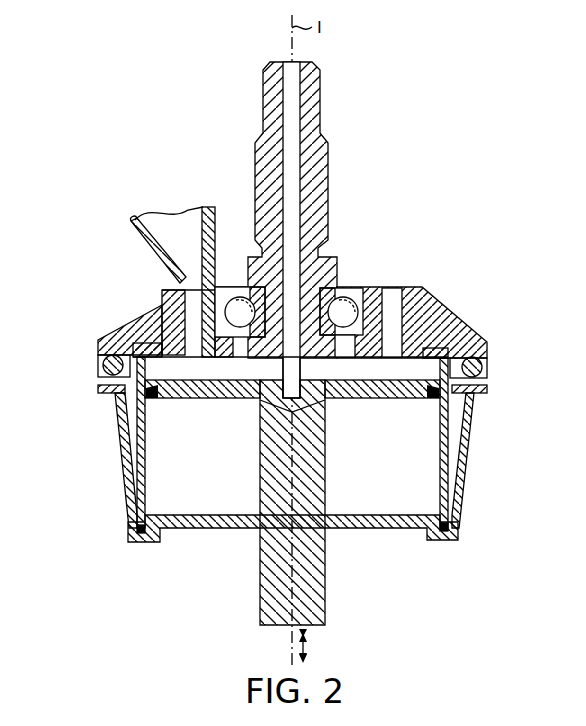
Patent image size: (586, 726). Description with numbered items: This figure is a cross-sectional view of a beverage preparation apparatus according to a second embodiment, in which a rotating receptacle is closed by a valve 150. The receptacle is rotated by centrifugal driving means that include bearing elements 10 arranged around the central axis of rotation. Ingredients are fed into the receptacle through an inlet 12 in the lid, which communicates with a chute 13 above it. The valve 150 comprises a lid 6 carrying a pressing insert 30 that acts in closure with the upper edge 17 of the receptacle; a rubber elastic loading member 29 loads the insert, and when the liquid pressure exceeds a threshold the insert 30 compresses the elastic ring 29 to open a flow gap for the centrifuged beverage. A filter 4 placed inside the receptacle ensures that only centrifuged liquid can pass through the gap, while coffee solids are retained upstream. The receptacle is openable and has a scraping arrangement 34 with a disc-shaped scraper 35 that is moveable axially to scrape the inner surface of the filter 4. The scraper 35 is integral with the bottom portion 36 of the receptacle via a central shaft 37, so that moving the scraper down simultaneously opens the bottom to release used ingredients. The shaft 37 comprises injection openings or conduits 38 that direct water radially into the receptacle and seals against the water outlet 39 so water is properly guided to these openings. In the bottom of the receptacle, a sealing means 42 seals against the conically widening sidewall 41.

The valve 150 is at (88, 292).
The chute 13 is at (134, 231).
The inlet 12 is at (184, 297).
The bearing element 10 is at (223, 287).
The water outlet 39 is at (297, 228).
The lid 6 is at (452, 320).
The rubber elastic loading member 29 is at (101, 363).
The pressing insert 30 is at (485, 371).
The upper edge 17 is at (101, 394).
The filter 4 is at (146, 445).
The injection openings or conduits 38 is at (266, 410).
The disc-shaped scraper 35 is at (362, 399).
The central shaft 37 is at (326, 462).
The conically widening sidewall 41 is at (467, 432).
The scraping arrangement 34 is at (430, 433).
The sealing means 42 is at (452, 529).
The bottom portion 36 is at (207, 529).